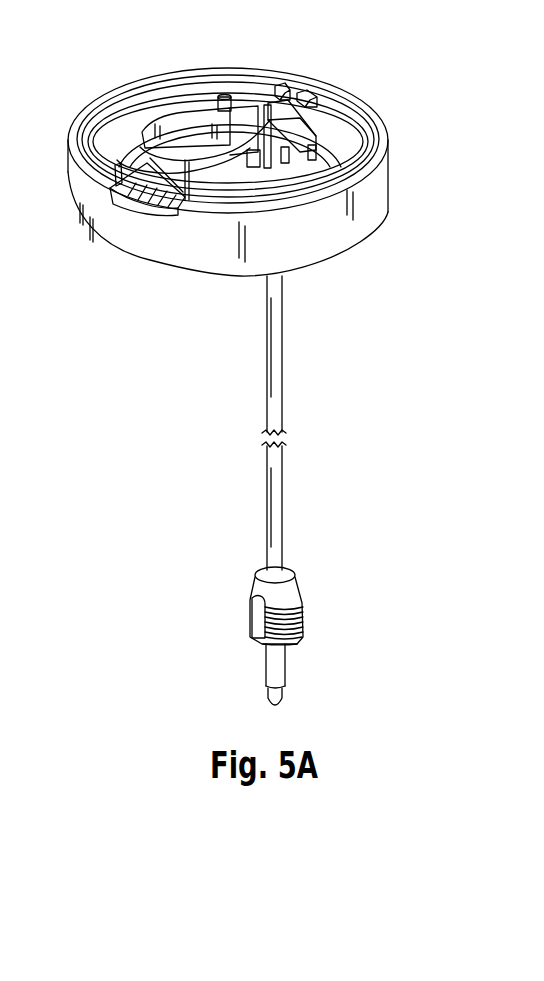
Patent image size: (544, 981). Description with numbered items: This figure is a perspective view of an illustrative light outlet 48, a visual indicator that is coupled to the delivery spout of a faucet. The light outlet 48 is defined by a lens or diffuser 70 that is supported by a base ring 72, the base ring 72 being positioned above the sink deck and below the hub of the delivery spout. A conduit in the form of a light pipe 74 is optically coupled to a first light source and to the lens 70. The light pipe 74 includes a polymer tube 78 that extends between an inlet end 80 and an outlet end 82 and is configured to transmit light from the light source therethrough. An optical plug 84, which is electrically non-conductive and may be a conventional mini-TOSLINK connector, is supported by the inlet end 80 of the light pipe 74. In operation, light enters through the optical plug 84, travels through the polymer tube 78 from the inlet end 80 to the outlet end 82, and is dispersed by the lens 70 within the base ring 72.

The base ring 72 is at (380, 183).
The lens 70 is at (167, 213).
The light outlet 48 is at (130, 210).
The outlet end 82 is at (122, 163).
The light pipe 74 is at (280, 357).
The polymer tube 78 is at (267, 502).
The inlet end 80 is at (312, 583).
The optical plug 84 is at (280, 668).